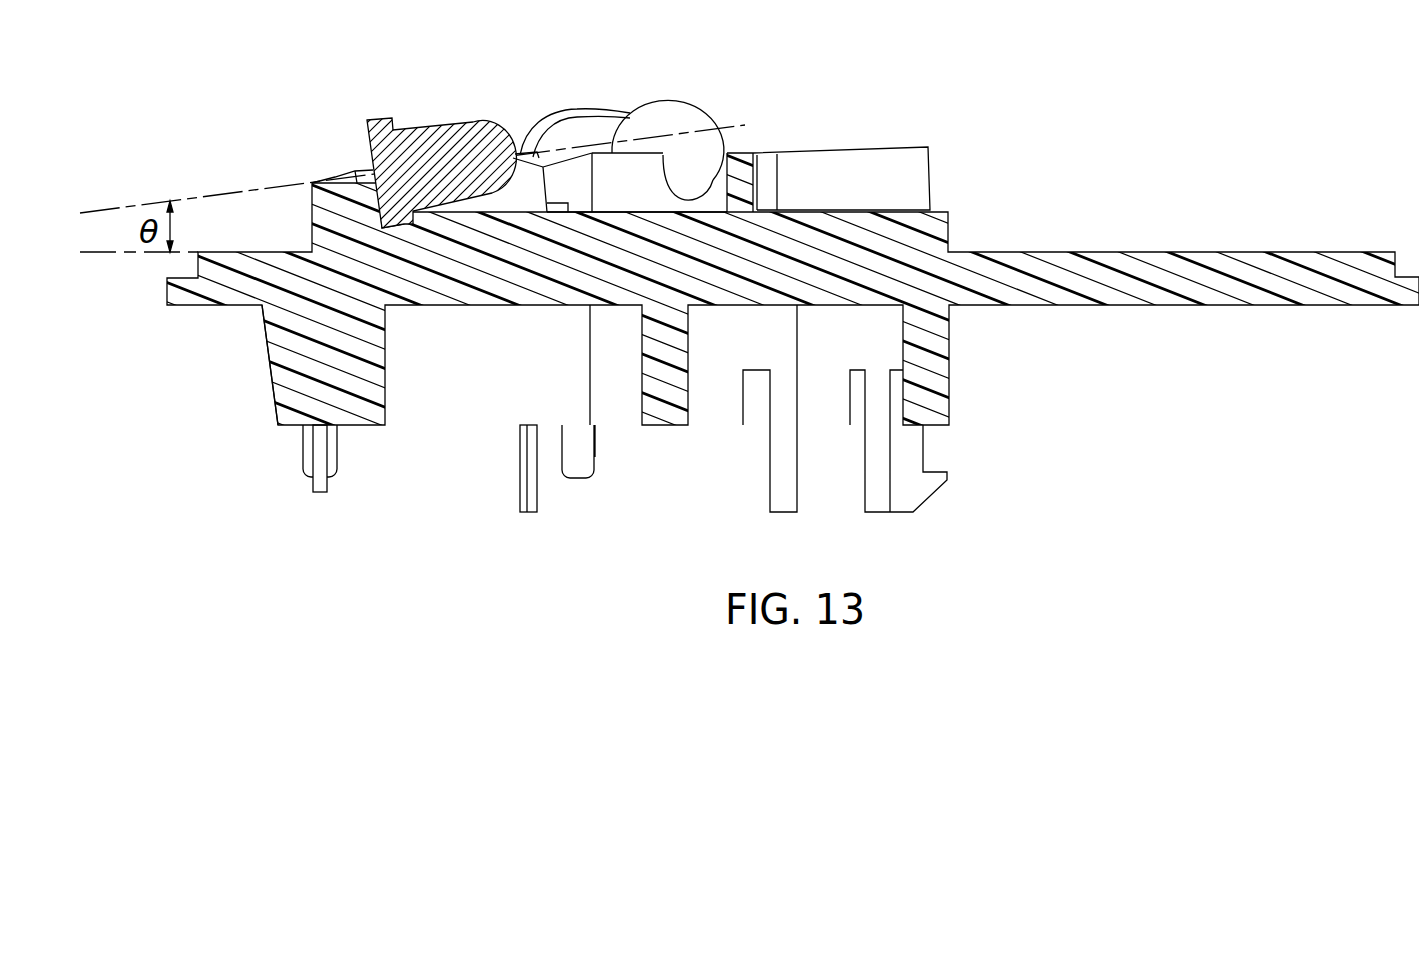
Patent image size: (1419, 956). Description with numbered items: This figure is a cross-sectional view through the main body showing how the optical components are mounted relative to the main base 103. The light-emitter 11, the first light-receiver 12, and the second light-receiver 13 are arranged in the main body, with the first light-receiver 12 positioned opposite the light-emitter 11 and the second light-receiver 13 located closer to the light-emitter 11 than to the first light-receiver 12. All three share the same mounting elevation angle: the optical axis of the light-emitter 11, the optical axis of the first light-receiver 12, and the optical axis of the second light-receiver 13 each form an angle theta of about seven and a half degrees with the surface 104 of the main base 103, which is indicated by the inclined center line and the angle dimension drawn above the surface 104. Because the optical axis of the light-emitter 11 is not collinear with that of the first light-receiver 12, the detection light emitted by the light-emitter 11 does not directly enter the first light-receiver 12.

The light-emitter 11 is at (617, 110).
The first light-receiver 12 is at (267, 187).
The second light-receiver 13 is at (437, 123).
The main base 103 is at (276, 408).
The surface 104 is at (218, 250).